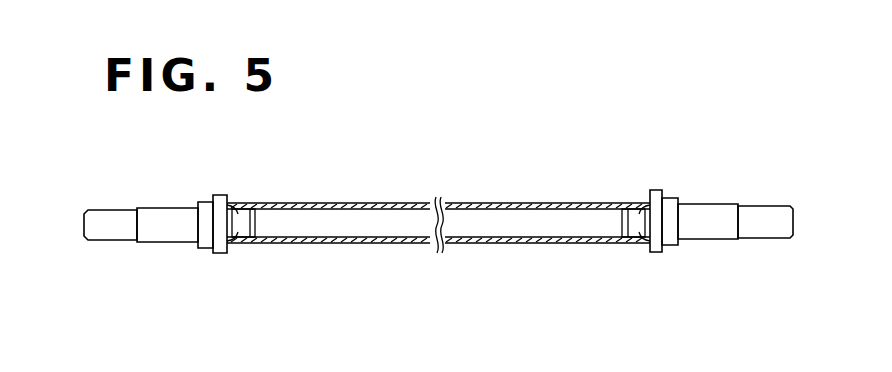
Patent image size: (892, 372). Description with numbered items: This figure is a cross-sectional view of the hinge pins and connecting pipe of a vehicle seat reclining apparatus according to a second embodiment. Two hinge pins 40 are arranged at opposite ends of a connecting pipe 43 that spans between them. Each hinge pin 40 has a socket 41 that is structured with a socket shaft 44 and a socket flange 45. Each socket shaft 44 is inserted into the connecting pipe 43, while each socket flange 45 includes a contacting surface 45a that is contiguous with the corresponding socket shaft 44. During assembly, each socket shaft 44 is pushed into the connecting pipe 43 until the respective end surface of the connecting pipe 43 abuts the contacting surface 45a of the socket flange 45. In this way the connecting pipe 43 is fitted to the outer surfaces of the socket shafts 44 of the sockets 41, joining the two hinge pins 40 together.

The hinge pin 40 is at (152, 252).
The socket 41 is at (245, 257).
The connecting pipe 43 is at (382, 202).
The socket shaft 44 is at (243, 213).
The socket flange 45 is at (222, 200).
The contacting surface 45a is at (229, 238).